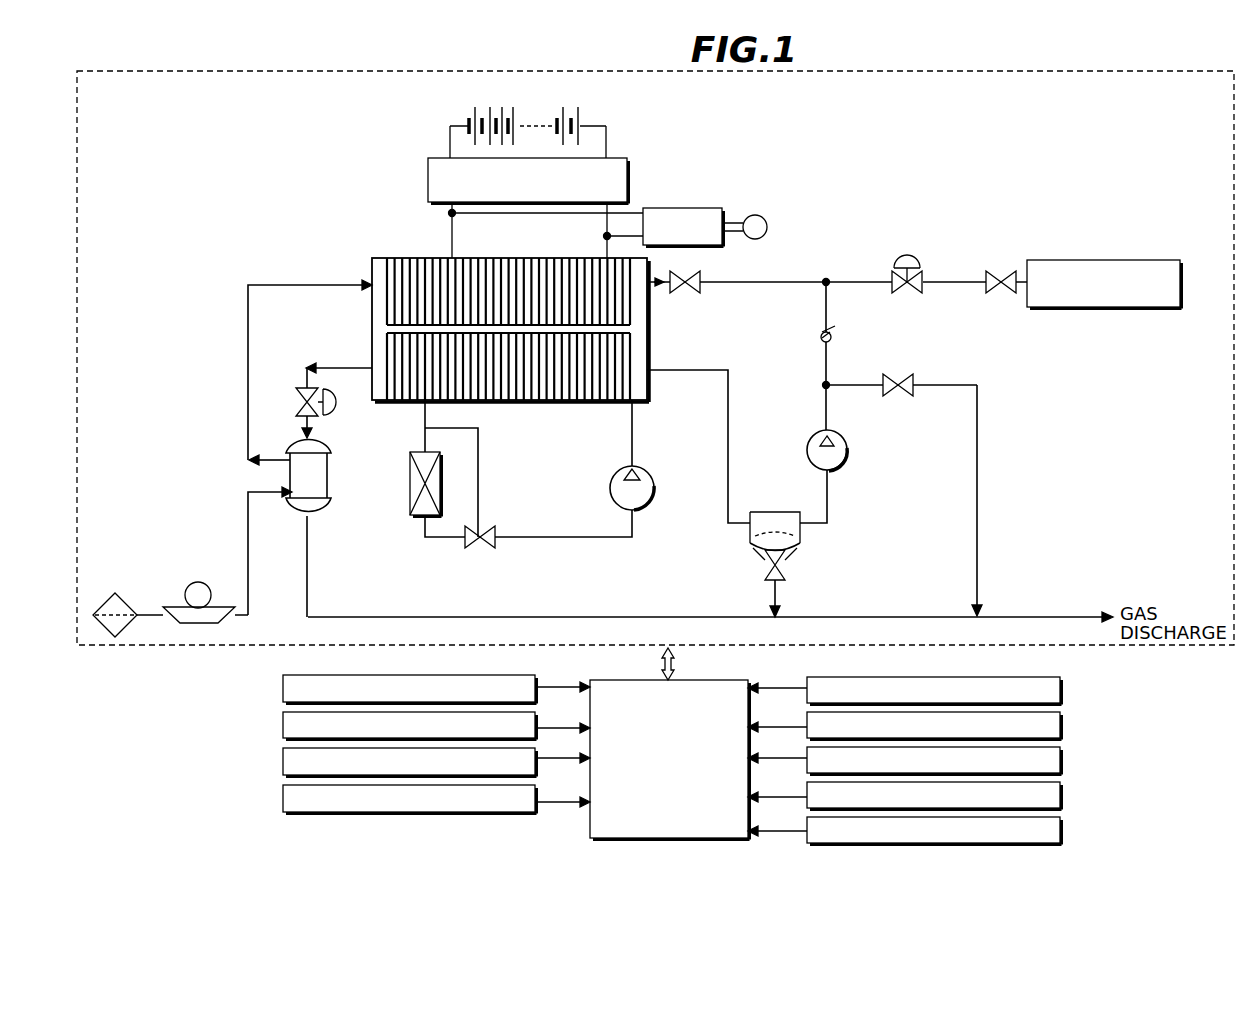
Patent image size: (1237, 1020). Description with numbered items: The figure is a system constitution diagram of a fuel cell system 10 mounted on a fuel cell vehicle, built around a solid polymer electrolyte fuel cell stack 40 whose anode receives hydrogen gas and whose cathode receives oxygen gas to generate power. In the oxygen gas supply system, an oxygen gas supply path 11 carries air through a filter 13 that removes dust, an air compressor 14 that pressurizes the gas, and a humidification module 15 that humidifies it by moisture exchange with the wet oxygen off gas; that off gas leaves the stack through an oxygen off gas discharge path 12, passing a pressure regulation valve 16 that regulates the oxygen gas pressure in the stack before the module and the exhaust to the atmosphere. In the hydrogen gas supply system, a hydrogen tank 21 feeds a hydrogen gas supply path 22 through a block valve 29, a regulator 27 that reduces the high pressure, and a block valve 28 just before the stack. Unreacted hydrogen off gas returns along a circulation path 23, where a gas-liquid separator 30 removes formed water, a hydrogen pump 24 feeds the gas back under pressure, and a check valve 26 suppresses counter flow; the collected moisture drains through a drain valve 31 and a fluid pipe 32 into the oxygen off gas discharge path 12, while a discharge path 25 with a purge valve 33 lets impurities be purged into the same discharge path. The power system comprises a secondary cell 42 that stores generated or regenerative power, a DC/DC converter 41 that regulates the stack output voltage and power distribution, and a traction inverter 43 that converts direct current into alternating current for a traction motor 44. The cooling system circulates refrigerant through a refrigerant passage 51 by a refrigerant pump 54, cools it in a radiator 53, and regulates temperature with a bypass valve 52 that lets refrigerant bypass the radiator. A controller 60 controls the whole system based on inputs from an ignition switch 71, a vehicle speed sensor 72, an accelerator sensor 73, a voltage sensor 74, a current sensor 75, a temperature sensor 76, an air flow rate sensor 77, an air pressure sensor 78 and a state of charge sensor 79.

The fuel cell system 10 is at (168, 645).
The oxygen gas supply path 11 is at (248, 383).
The oxygen off gas discharge path 12 is at (354, 368).
The filter 13 is at (115, 593).
The air compressor 14 is at (186, 590).
The humidification module 15 is at (327, 476).
The pressure regulation valve 16 is at (333, 413).
The hydrogen tank 21 is at (1125, 258).
The hydrogen gas supply path 22 is at (958, 282).
The circulation path 23 is at (680, 378).
The hydrogen pump 24 is at (847, 450).
The discharge path 25 is at (977, 490).
The check valve 26 is at (820, 338).
The regulator 27 is at (903, 255).
The block valve 28 is at (688, 294).
The block valve 29 is at (997, 294).
The gas-liquid separator 30 is at (783, 512).
The drain valve 31 is at (764, 555).
The fluid pipe 32 is at (778, 590).
The purge valve 33 is at (898, 374).
The fuel cell stack 40 is at (523, 402).
The DC/DC converter 41 is at (627, 182).
The secondary cell 42 is at (535, 122).
The traction inverter 43 is at (705, 208).
The traction motor 44 is at (767, 222).
The refrigerant passage 51 is at (535, 538).
The bypass valve 52 is at (480, 548).
The radiator 53 is at (441, 472).
The refrigerant pump 54 is at (655, 492).
The controller 60 is at (590, 720).
The ignition switch 71 is at (283, 693).
The vehicle speed sensor 72 is at (283, 728).
The accelerator sensor 73 is at (283, 766).
The voltage sensor 74 is at (283, 803).
The current sensor 75 is at (1063, 692).
The temperature sensor 76 is at (1063, 729).
The air flow rate sensor 77 is at (1063, 763).
The air pressure sensor 78 is at (1063, 798).
The state of charge (SOC) sensor 79 is at (1063, 833).